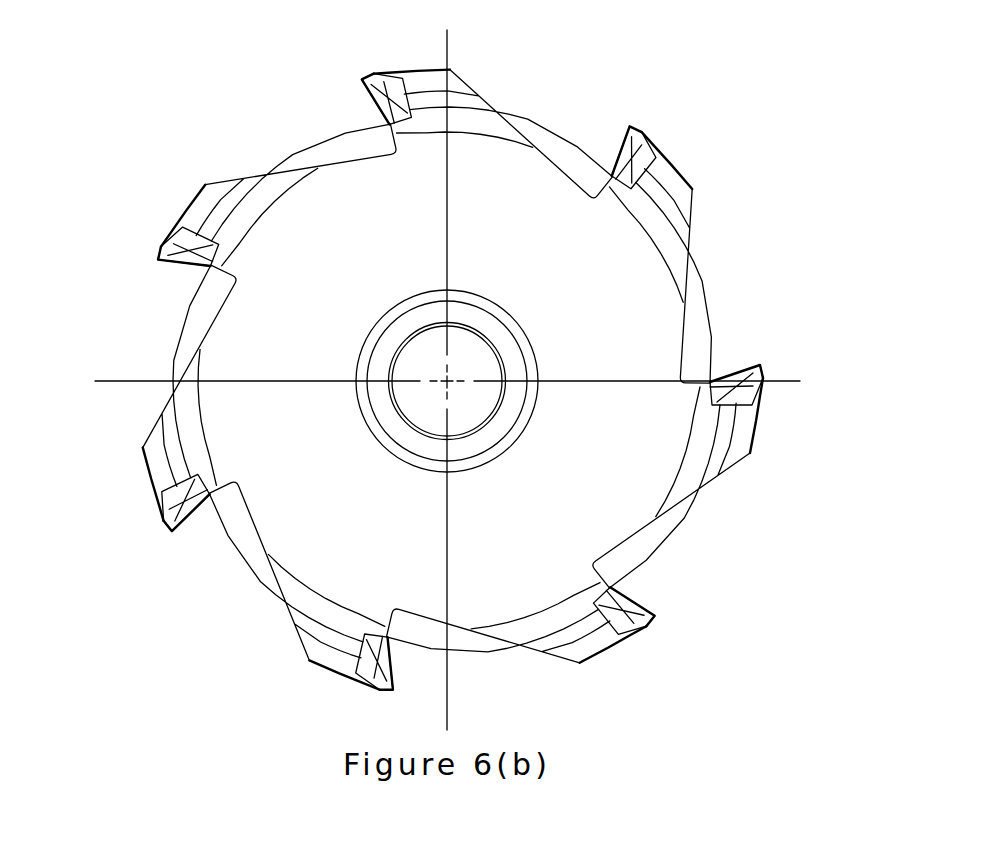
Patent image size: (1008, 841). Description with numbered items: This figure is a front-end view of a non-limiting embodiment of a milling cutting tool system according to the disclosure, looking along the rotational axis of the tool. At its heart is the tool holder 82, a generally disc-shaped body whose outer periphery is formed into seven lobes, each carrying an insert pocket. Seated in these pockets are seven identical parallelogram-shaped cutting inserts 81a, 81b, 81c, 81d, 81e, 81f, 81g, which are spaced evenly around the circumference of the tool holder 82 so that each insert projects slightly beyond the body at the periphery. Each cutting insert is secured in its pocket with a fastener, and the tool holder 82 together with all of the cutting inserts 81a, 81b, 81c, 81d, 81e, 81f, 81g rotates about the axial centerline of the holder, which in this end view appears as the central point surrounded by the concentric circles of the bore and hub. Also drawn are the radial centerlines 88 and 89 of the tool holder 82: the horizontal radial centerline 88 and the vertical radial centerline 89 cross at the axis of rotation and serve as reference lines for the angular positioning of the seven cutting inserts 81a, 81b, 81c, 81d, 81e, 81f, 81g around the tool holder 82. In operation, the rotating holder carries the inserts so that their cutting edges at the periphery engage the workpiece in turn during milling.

The cutting insert 81a is at (770, 364).
The cutting insert 81b is at (664, 604).
The cutting insert 81c is at (367, 683).
The cutting insert 81d is at (166, 533).
The cutting insert 81e is at (157, 260).
The cutting insert 81f is at (359, 81).
The cutting insert 81g is at (644, 125).
The tool holder 82 is at (616, 333).
The radial centerline 88 is at (787, 391).
The radial centerline 89 is at (462, 690).